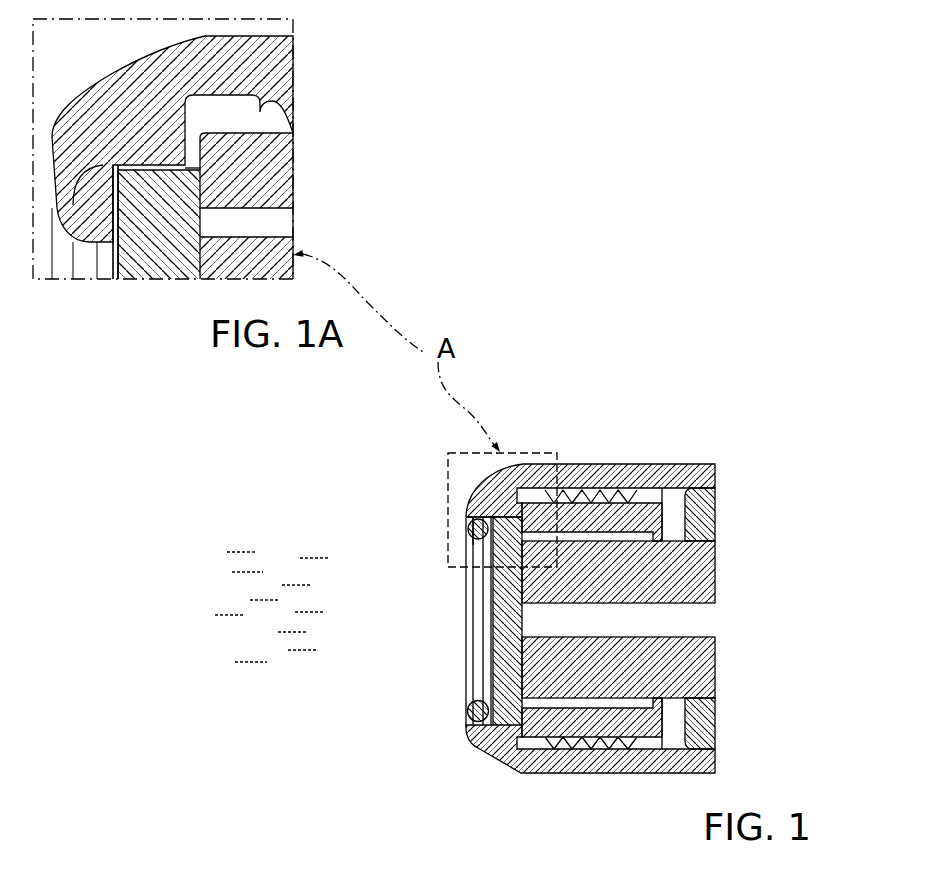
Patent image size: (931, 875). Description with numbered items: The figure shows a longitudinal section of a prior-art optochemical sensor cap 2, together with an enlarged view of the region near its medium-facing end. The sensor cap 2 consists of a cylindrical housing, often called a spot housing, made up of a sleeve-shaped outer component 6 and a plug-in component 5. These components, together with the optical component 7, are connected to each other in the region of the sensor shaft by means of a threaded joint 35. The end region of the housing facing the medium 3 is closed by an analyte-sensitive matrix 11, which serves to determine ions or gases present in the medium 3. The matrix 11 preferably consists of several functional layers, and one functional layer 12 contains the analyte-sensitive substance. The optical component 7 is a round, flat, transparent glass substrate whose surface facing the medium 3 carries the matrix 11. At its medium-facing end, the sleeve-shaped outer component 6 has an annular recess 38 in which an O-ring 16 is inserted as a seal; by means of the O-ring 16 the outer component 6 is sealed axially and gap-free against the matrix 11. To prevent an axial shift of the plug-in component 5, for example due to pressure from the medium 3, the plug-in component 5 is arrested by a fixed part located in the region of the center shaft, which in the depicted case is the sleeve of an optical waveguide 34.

In FIG. 1, the sensor cap 2 is at (552, 623).
In FIG. 1, the medium 3 is at (266, 641).
In FIG. 1, the plug-in component 5 is at (588, 500).
In FIG. 1, the sleeve-shaped outer component 6 is at (620, 623).
In FIG. 1, the optical component 7 is at (476, 720).
In FIG. 1A, the analyte-sensitive matrix 11 is at (116, 257).
In FIG. 1, the analyte-sensitive matrix 11 is at (488, 652).
In FIG. 1A, the functional layer 12 is at (125, 217).
In FIG. 1, the O-ring 16 is at (469, 523).
In FIG. 1, the optical waveguide 34 is at (684, 573).
In FIG. 1, the threaded joint 35 is at (597, 750).
In FIG. 1, the annular recess 38 is at (462, 545).